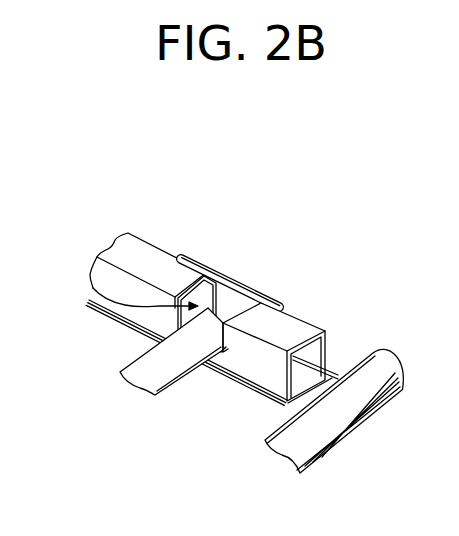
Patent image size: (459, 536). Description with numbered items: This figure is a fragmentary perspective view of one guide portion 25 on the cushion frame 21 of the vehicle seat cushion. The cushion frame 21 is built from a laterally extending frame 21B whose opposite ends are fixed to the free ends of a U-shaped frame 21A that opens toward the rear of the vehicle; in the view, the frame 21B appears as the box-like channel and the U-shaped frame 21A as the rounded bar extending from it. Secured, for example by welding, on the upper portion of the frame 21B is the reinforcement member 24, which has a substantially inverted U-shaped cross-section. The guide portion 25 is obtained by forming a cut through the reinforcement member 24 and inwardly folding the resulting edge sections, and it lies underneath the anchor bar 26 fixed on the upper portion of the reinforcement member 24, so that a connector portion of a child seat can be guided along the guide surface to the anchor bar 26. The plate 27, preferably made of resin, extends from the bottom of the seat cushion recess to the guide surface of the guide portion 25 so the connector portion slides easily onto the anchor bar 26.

The cushion frame 21 is at (430, 270).
The U-shaped frame 21A is at (390, 364).
The frame 21B is at (332, 372).
The reinforcement member 24 is at (158, 247).
The guide portion 25 is at (97, 286).
The anchor bar 26 is at (237, 282).
The plate 27 is at (183, 360).